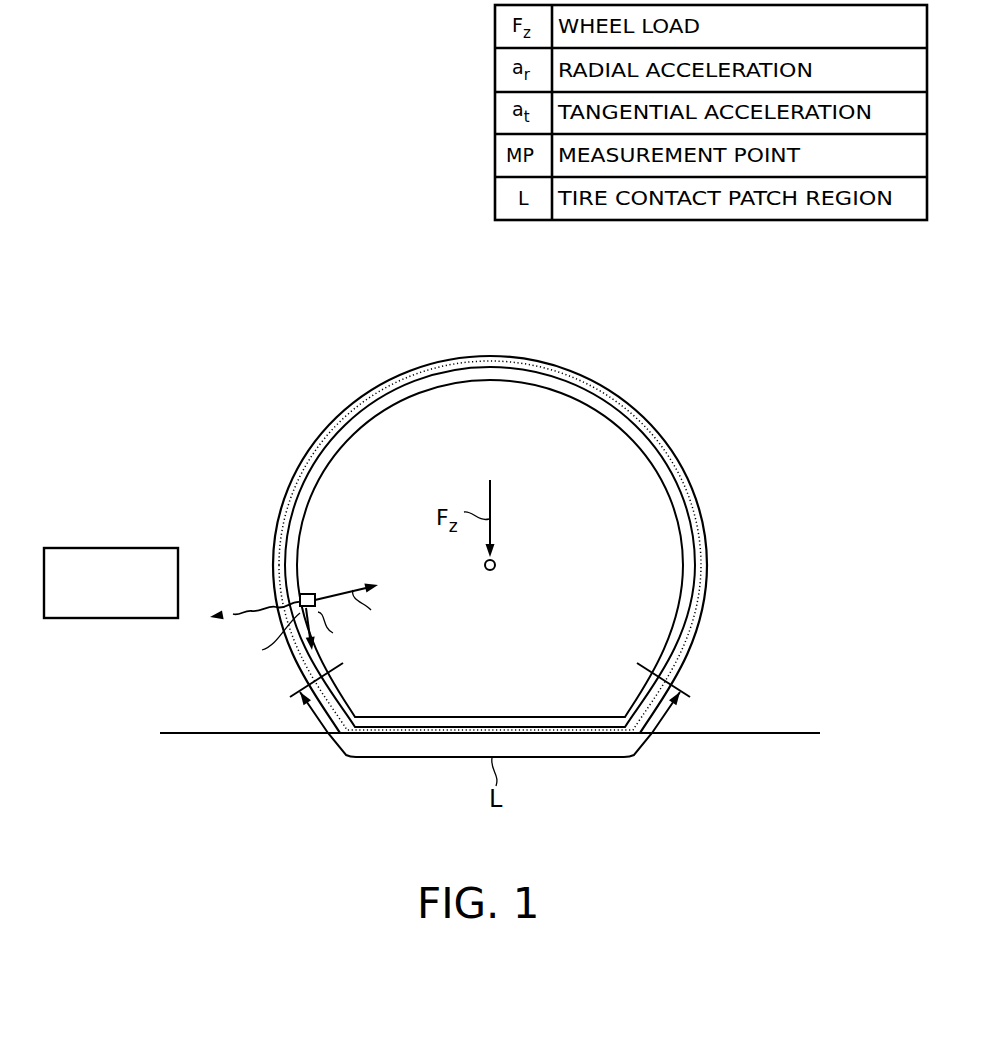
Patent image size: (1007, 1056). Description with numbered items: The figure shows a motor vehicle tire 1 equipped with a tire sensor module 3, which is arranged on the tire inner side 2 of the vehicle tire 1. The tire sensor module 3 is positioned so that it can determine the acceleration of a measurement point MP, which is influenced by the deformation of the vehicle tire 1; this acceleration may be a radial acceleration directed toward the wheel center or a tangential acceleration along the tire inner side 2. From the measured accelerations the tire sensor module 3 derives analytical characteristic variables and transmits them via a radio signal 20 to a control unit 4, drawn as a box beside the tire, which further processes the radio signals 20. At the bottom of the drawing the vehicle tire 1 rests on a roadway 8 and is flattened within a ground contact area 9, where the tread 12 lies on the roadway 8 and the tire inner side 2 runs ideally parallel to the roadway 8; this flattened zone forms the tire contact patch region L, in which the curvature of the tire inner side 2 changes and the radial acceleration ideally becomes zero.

The vehicle tire 1 is at (320, 437).
The tire inner side 2 is at (489, 394).
The tire sensor module 3 is at (313, 597).
The control unit 4 is at (110, 548).
The roadway 8 is at (747, 733).
The ground contact area 9 is at (572, 714).
The tread 12 is at (490, 356).
The radio signal 20 is at (247, 610).